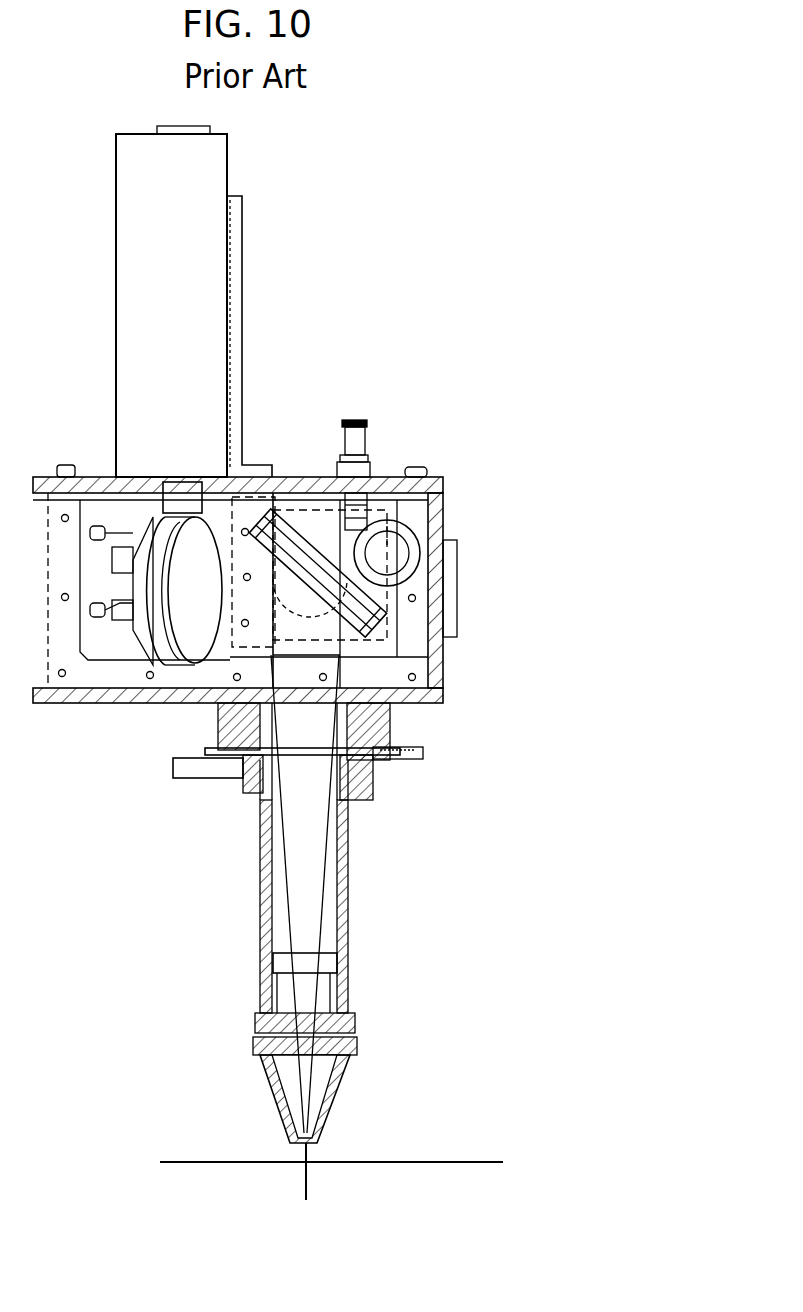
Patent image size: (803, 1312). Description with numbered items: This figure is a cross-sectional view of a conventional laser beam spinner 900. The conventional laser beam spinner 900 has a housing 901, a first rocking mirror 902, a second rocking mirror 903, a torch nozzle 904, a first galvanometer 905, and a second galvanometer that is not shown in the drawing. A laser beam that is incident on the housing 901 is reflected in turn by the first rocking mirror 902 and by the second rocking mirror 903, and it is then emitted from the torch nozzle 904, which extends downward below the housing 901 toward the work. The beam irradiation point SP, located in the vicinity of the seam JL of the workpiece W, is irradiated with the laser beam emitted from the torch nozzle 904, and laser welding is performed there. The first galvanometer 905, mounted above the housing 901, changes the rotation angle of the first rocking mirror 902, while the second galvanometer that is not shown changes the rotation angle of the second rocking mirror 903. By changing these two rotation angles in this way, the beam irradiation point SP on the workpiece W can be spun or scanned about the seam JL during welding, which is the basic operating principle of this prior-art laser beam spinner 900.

The conventional laser beam spinner 900 is at (512, 376).
The housing 901 is at (98, 697).
The first rocking mirror 902 is at (185, 540).
The second rocking mirror 903 is at (377, 620).
The torch nozzle 904 is at (340, 960).
The first galvanometer 905 is at (207, 183).
The beam irradiation point SP is at (307, 1162).
The workpiece W is at (447, 1167).
The seam JL is at (303, 1185).